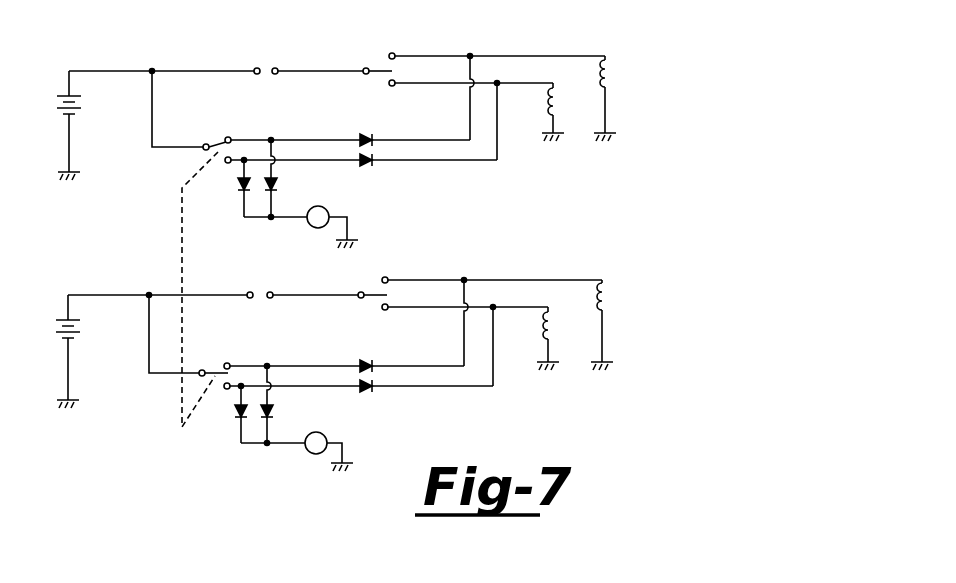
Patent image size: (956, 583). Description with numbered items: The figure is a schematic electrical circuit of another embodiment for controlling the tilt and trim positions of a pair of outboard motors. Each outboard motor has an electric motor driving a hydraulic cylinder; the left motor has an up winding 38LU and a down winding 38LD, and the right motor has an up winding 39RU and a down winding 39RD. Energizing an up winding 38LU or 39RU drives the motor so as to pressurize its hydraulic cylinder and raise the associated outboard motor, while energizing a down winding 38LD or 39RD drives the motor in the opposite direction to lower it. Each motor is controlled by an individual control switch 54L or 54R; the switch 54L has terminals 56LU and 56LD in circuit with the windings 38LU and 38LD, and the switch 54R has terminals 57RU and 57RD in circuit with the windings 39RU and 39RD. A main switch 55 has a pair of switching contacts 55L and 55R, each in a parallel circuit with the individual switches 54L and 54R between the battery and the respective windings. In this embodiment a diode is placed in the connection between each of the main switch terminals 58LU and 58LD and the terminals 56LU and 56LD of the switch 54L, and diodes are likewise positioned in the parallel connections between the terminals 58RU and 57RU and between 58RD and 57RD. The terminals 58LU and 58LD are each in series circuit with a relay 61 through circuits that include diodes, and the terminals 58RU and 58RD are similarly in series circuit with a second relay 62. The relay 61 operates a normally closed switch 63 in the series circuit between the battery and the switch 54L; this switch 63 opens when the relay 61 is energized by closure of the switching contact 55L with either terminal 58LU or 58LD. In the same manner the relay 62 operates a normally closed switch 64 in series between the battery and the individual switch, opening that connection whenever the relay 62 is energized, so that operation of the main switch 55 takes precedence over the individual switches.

The normally closed switch 64 is at (268, 74).
The normally closed switch 63 is at (262, 298).
The individual control switch 54L is at (380, 68).
The individual control switch 54R is at (376, 292).
The up terminal of switch 54L 56LU is at (395, 56).
The down terminal of switch 54L 56LD is at (393, 86).
The up terminal of switch 54R 57RU is at (388, 280).
The down terminal of switch 54R 57RD is at (388, 310).
The main switch 55 is at (178, 232).
The switching contact 55L is at (222, 146).
The switching contact 55R is at (215, 370).
The up terminal of main switch 58LU is at (232, 138).
The down terminal of main switch 58LD is at (226, 163).
The up terminal of main switch 58RU is at (231, 365).
The down terminal of main switch 58RD is at (226, 389).
The up winding 38LU is at (610, 72).
The down winding 38LD is at (560, 108).
The up winding 39RU is at (607, 292).
The down winding 39RD is at (555, 330).
The relay 61 is at (330, 208).
The second relay 62 is at (327, 435).